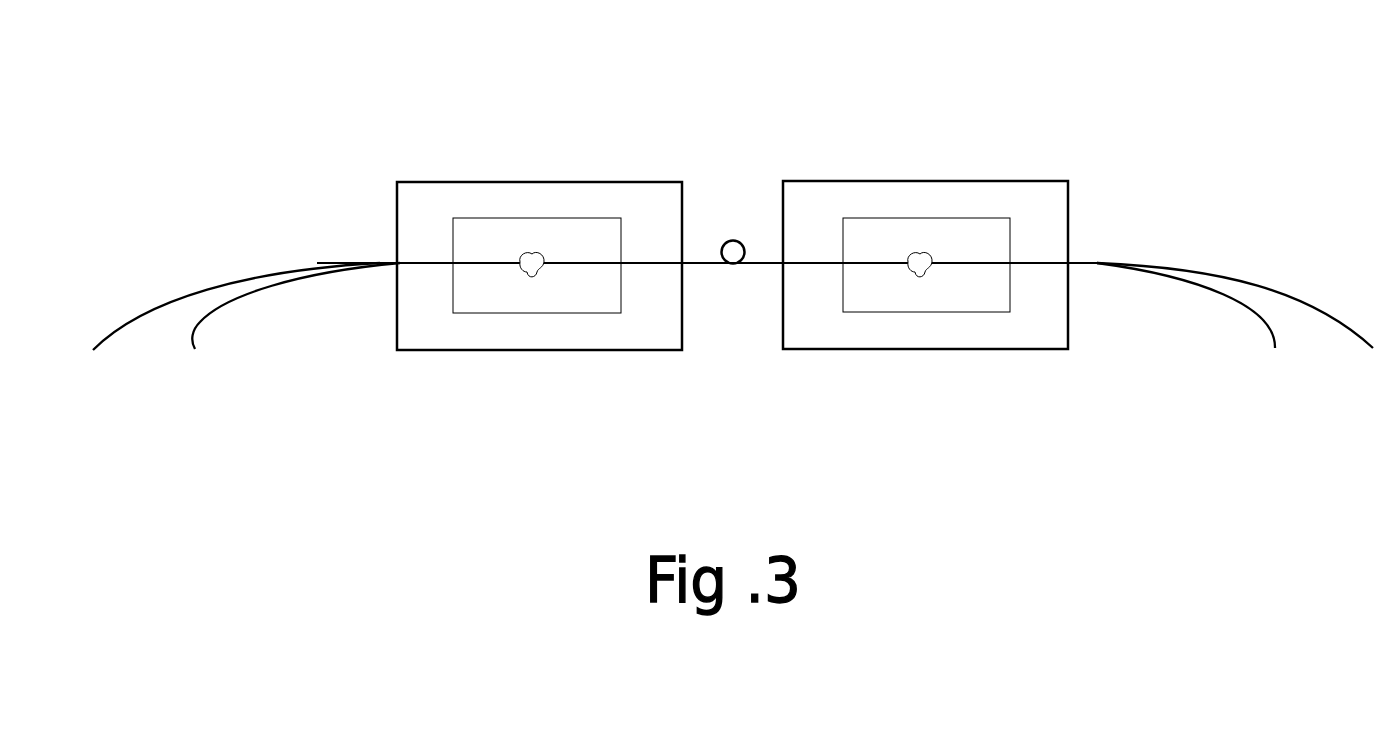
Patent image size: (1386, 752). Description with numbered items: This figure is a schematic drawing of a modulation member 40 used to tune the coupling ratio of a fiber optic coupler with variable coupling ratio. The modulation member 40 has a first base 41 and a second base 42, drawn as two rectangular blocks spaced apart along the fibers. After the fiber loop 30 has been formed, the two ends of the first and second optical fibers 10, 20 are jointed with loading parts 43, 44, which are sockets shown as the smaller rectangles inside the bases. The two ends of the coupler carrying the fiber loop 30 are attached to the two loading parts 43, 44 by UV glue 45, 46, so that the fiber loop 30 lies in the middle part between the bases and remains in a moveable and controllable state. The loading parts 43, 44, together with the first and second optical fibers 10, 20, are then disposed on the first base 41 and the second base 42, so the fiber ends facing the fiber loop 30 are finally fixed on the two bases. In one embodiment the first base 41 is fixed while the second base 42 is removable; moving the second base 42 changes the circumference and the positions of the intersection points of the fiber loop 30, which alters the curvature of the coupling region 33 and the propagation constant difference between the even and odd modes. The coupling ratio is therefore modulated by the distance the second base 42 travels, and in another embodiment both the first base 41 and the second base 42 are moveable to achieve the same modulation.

The first optical fiber 10 is at (133, 266).
The second optical fiber 20 is at (240, 333).
The fiber loop 30 is at (705, 189).
The coupling region 33 is at (742, 240).
The modulation member 40 is at (472, 205).
The first base 41 is at (498, 195).
The second base 42 is at (875, 202).
The loading part 43 is at (585, 238).
The loading part 44 is at (982, 237).
The UV glue 45 is at (532, 262).
The UV glue 46 is at (922, 262).